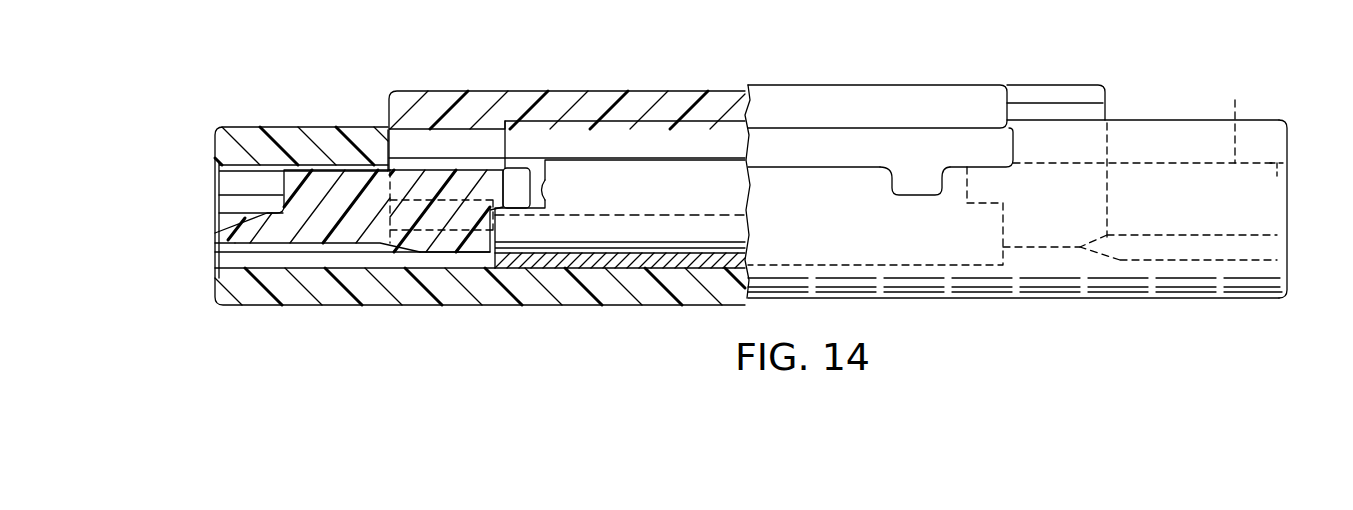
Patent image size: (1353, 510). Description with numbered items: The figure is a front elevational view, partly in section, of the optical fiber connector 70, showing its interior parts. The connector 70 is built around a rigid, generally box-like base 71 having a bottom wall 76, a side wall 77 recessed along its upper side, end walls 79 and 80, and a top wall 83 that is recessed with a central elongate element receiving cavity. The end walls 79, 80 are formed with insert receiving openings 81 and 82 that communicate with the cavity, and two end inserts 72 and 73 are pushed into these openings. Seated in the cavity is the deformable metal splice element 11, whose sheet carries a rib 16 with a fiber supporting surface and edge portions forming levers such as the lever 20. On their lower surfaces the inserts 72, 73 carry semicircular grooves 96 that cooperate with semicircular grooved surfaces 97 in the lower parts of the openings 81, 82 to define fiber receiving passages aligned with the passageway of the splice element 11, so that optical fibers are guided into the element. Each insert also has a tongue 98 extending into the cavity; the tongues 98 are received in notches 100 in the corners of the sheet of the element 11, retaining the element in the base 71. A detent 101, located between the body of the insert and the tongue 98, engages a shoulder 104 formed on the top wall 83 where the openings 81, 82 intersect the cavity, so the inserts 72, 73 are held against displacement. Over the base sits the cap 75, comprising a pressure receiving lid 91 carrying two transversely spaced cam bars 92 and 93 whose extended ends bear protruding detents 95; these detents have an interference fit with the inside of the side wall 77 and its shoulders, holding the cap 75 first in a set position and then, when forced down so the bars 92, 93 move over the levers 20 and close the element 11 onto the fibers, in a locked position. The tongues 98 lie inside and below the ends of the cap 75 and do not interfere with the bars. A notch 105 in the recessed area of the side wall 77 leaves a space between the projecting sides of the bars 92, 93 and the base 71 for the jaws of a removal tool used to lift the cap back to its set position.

The splice element 11 is at (632, 158).
The rib 16 is at (668, 265).
The edge portion 20 is at (688, 175).
The connector 70 is at (1039, 176).
The base 71 is at (1063, 305).
The end insert 72 is at (316, 182).
The end insert 73 is at (1240, 115).
The cap 75 is at (762, 82).
The bottom wall 76 is at (918, 303).
The side wall 77 is at (822, 170).
The end wall 79 is at (213, 140).
The end wall 80 is at (1288, 128).
The insert receiving opening 81 is at (222, 178).
The insert receiving opening 82 is at (1283, 181).
The top wall 83 is at (1188, 120).
The pressure receiving lid 91 is at (492, 90).
The cam bar 92 is at (916, 135).
The cam bar 93 is at (588, 128).
The detent 95 is at (1040, 105).
The semicircular groove 96 is at (213, 265).
The semicircular grooved surface 97 is at (215, 241).
The tongue 98 is at (525, 170).
The notch 100 is at (547, 186).
The detent 101 is at (412, 158).
The shoulder 104 is at (388, 160).
The notch 105 is at (928, 160).